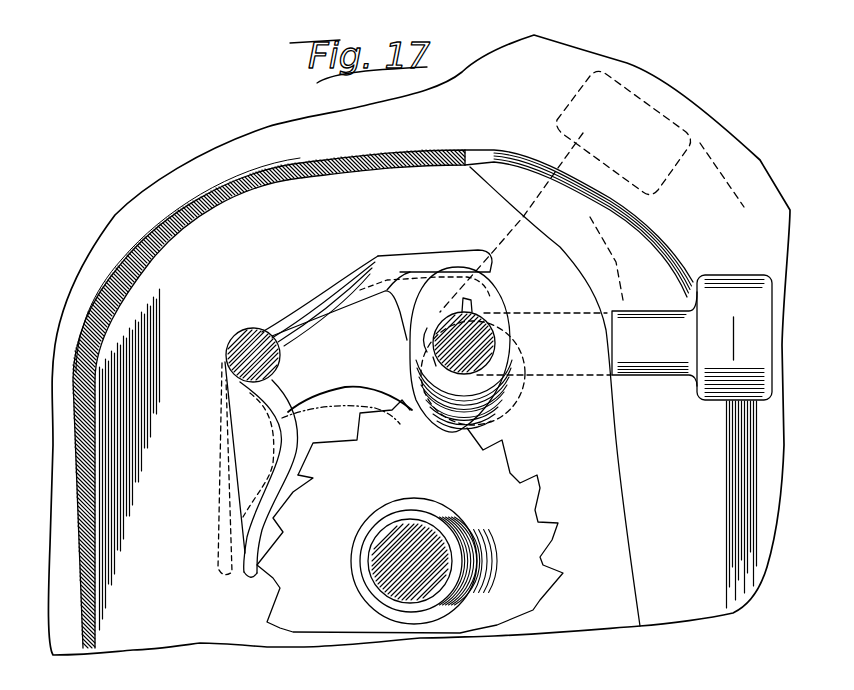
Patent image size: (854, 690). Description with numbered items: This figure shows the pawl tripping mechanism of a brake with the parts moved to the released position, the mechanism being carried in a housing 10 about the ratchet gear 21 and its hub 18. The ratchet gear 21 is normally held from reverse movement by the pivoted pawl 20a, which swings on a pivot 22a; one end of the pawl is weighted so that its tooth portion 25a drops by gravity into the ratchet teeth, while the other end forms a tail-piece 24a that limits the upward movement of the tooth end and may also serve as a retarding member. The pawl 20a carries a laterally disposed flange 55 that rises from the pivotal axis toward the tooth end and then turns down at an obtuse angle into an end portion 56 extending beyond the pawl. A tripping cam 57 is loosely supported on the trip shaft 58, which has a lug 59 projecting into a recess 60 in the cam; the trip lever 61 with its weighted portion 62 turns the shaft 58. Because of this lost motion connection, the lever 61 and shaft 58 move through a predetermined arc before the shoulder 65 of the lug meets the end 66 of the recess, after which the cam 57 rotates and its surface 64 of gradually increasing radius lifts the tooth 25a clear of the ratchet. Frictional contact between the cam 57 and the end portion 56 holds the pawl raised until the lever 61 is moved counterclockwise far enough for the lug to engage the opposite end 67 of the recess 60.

The casing 10 is at (97, 652).
The hub 18 is at (368, 557).
The pivoted pawl 20a is at (333, 333).
The ratchet gear 21 is at (294, 634).
The pivot pin 22a is at (226, 357).
The tail-piece 24a is at (248, 576).
The tooth portion 25a is at (395, 400).
The laterally disposed flange 55 is at (343, 284).
The end portion 56 is at (418, 257).
The tripping cam 57 is at (512, 355).
The trip shaft 58 is at (496, 344).
The lug 59 is at (440, 307).
The recess 60 is at (428, 423).
The trip lever 61 is at (650, 299).
The weighted portion 62 is at (744, 283).
The cam surface 64 is at (511, 369).
The shoulder 65 is at (447, 307).
The end of the recess 66 is at (430, 322).
The end of the recess 67 is at (432, 361).